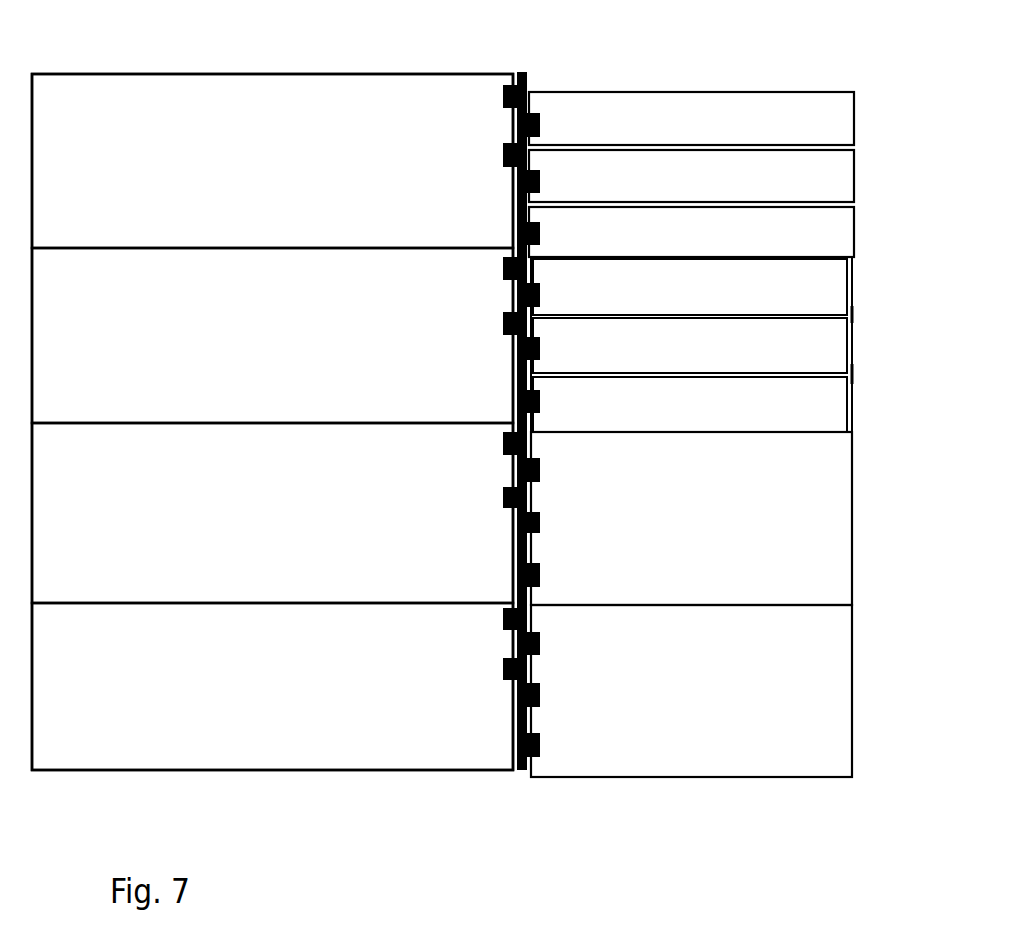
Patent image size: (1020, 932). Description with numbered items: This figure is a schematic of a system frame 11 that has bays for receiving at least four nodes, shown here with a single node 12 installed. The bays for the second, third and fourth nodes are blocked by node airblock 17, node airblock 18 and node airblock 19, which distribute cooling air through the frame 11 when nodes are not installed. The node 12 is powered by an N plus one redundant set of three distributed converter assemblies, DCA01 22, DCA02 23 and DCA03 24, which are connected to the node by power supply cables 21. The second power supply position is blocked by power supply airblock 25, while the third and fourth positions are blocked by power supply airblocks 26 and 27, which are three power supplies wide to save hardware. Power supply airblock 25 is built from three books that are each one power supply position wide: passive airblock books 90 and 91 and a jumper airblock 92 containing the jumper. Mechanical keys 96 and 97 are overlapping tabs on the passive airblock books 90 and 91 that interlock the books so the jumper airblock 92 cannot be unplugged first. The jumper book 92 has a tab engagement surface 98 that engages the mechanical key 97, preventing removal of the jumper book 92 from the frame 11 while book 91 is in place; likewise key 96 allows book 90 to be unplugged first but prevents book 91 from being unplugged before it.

The system frame 11 is at (430, 770).
The node 12 is at (272, 161).
The node airblock 17 is at (272, 335).
The node airblock 18 is at (272, 513).
The node airblock 19 is at (272, 686).
The power supply cables 21 is at (525, 72).
The DCA01 22 is at (691, 232).
The DCA02 23 is at (691, 176).
The DCA03 24 is at (691, 118).
The power supply airblock 25 is at (856, 427).
The power supply airblock 26 is at (691, 518).
The power supply airblock 27 is at (691, 691).
The passive airblock book 90 is at (840, 293).
The passive airblock book 91 is at (828, 348).
The jumper airblock 92 is at (830, 402).
The mechanical key 96 is at (856, 308).
The mechanical key 97 is at (853, 375).
The tab engagement surface 98 is at (840, 378).